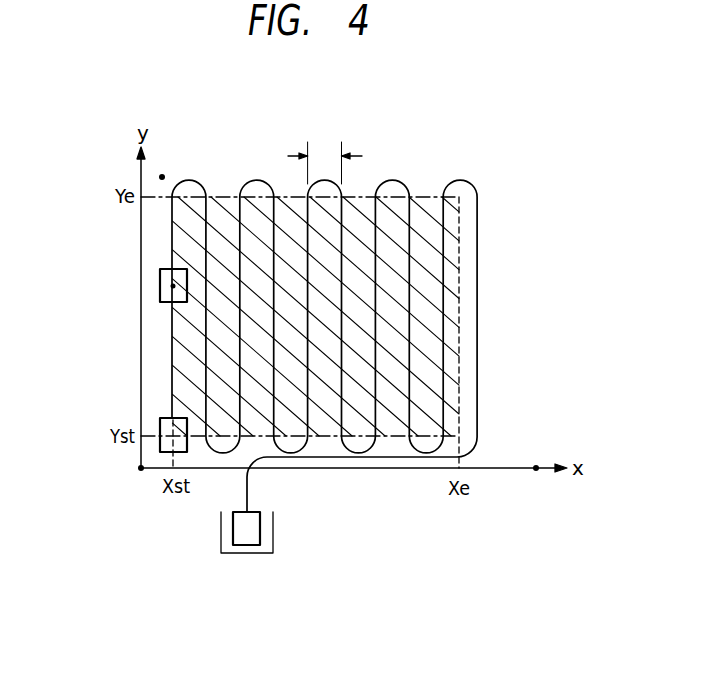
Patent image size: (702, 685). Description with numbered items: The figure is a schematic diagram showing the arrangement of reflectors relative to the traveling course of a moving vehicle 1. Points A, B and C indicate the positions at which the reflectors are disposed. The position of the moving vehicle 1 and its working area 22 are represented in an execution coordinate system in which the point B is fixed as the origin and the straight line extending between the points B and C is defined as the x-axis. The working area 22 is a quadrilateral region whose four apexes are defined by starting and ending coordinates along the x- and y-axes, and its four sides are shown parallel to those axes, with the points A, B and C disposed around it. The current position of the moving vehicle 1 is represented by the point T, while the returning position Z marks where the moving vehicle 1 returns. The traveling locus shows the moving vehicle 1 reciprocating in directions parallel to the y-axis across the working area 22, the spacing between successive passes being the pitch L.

The moving vehicle 1 is at (187, 446).
The working area 22 is at (347, 190).
The point A is at (162, 177).
The point B is at (131, 490).
The point C is at (536, 470).
The current position T is at (172, 286).
The returning position Z is at (262, 551).
The pitch L is at (325, 163).